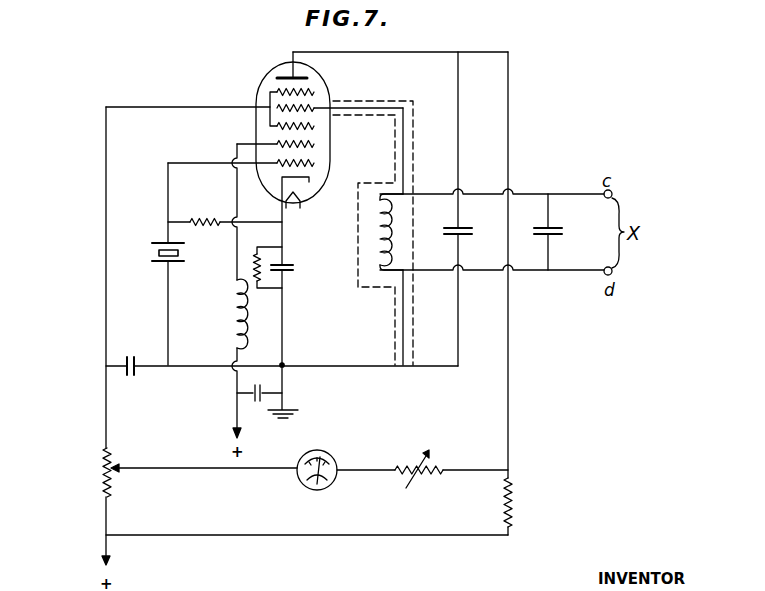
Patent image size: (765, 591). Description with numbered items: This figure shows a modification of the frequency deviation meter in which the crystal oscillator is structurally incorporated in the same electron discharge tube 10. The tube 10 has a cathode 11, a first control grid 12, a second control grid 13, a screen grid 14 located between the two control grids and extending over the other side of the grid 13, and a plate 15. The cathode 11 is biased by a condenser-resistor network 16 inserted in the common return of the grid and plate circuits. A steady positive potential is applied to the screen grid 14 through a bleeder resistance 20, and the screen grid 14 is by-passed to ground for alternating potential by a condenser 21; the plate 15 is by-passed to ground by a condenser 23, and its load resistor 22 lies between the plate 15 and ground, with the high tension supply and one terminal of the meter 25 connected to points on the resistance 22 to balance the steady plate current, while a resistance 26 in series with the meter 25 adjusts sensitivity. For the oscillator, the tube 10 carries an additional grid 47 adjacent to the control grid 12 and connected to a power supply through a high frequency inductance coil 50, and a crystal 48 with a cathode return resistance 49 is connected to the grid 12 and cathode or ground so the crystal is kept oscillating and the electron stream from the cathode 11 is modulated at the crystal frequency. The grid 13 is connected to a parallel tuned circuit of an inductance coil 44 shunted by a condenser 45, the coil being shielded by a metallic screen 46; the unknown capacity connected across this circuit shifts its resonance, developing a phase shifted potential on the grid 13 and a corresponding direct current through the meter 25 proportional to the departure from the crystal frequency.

The electron discharge tube 10 is at (323, 176).
The cathode 11 is at (310, 182).
The first control grid 12 is at (314, 163).
The second control grid 13 is at (314, 106).
The screen grid 14 is at (278, 91).
The plate 15 is at (299, 78).
The condenser-resistor network 16 is at (285, 273).
The bleeder resistance 20 is at (104, 482).
The condenser 21 is at (136, 373).
The load resistor 22 is at (514, 498).
The condenser 23 is at (462, 236).
The meter 25 is at (333, 482).
The resistance 26 is at (425, 473).
The inductance coil 44 is at (387, 232).
The condenser 45 is at (552, 237).
The metallic screen 46 is at (414, 303).
The additional grid 47 is at (314, 144).
The crystal 48 is at (170, 263).
The cathode return resistance 49 is at (225, 212).
The high frequency inductance coil 50 is at (232, 323).